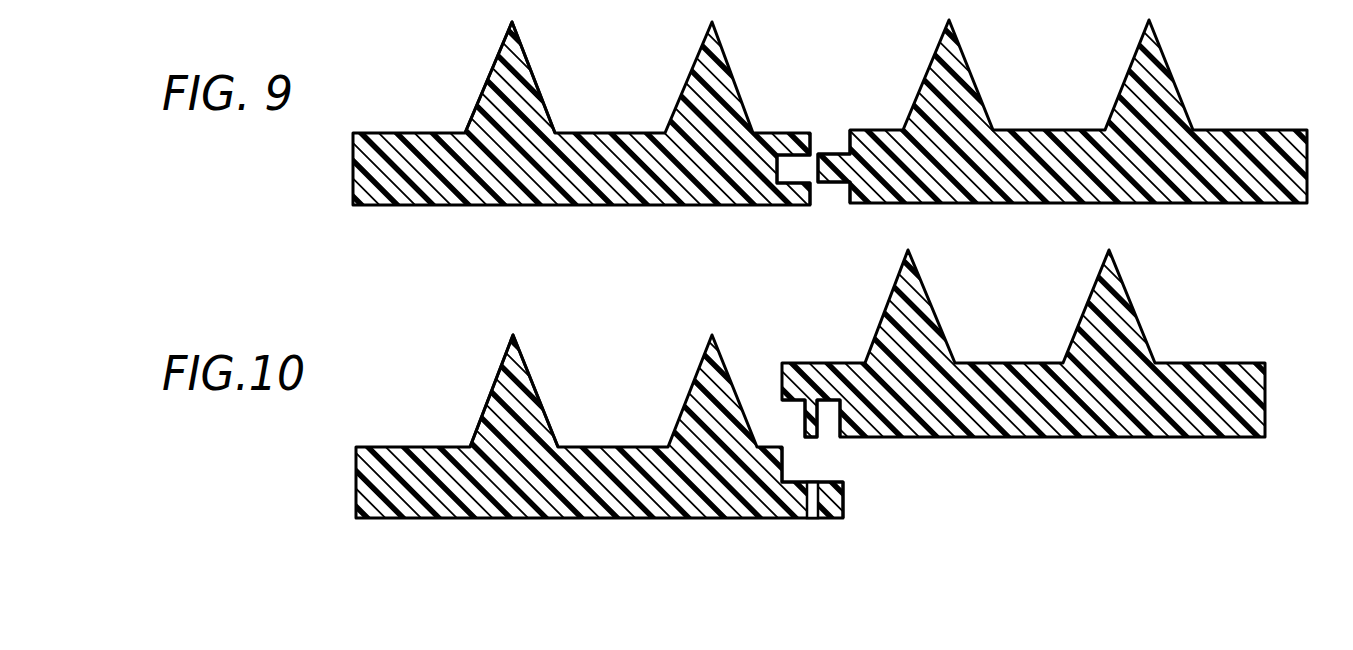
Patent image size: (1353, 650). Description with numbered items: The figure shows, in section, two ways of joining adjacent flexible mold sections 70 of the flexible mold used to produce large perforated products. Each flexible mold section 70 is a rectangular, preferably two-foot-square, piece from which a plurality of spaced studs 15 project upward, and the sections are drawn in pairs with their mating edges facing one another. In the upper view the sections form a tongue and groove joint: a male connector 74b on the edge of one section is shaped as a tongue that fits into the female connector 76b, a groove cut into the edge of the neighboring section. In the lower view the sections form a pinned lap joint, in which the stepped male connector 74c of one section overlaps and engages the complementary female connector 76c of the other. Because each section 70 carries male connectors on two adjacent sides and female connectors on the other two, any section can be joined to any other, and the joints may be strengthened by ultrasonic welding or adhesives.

In FIG. 9, the flexible mold section 70 is at (472, 0).
In FIG. 10, the flexible mold section 70 is at (407, 522).
In FIG. 9, the stud 15 is at (540, 97).
In FIG. 10, the stud 15 is at (532, 380).
In FIG. 9, the male connector 74b is at (858, 106).
In FIG. 9, the female connector 76b is at (812, 206).
In FIG. 10, the male connector 74c is at (816, 357).
In FIG. 10, the female connector 76c is at (845, 500).